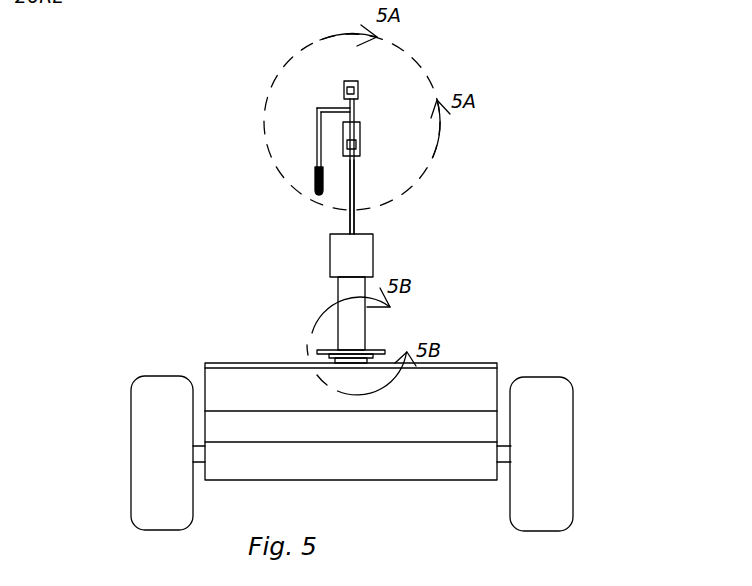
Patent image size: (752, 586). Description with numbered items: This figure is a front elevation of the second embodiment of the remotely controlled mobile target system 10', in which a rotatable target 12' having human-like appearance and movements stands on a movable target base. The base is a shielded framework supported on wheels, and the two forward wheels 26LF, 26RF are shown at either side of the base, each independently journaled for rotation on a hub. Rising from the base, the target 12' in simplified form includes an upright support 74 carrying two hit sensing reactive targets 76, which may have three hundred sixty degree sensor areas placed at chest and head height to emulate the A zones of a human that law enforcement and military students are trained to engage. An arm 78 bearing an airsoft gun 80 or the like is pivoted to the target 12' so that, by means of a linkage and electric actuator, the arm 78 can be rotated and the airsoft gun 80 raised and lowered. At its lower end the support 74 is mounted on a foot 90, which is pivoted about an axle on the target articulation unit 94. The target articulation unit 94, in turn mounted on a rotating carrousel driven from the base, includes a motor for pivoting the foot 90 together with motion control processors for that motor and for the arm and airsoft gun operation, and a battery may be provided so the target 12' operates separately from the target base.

The mobile target system 10' is at (421, 316).
The rotatable target 12' is at (385, 166).
The support 74 is at (355, 226).
The hit sensing reactive targets 76 is at (356, 145).
The arm 78 is at (333, 108).
The airsoft gun 80 is at (313, 182).
The foot 90 is at (373, 255).
The target articulation unit 94 is at (337, 288).
The forward wheel 26LF is at (573, 447).
The forward wheel 26RF is at (131, 437).